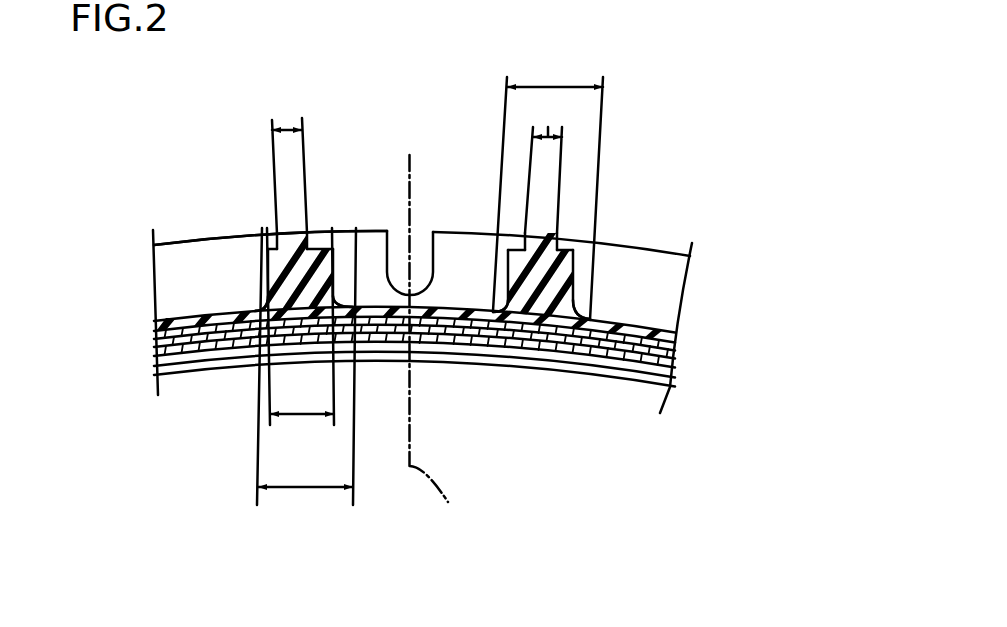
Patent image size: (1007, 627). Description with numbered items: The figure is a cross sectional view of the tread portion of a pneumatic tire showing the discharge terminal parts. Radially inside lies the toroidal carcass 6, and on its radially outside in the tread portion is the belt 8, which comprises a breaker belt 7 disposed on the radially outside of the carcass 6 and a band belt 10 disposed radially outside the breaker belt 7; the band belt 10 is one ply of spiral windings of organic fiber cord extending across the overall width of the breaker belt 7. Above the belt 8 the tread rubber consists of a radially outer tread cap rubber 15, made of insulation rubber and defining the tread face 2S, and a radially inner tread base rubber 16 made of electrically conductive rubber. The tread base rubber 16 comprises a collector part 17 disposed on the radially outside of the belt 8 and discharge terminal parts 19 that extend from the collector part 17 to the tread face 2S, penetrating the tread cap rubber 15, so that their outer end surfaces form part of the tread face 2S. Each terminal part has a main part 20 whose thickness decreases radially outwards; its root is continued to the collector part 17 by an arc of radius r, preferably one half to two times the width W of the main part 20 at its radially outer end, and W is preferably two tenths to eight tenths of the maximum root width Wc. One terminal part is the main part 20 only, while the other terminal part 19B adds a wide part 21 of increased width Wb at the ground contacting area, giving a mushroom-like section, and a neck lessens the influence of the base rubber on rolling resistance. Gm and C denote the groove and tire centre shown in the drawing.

The tread face 2S is at (183, 230).
The tread cap rubber 15 is at (172, 275).
The tread base rubber 16 is at (815, 225).
The collector part 17 is at (637, 320).
The discharge terminal part 19 is at (509, 210).
The discharge terminal part 19B is at (340, 245).
The main part 20 is at (280, 271).
The wide part 21 is at (263, 234).
The belt 8 is at (826, 370).
The band belt 10 is at (676, 354).
The breaker belt 7 is at (672, 366).
The carcass 6 is at (673, 365).
The main groove Gm is at (421, 229).
The tire equator C is at (441, 357).
The width of the main part W is at (280, 130).
The width at the ground contacting area Wb is at (302, 413).
The maximum width at the root Wc is at (555, 87).
The radius of the arc r is at (344, 292).